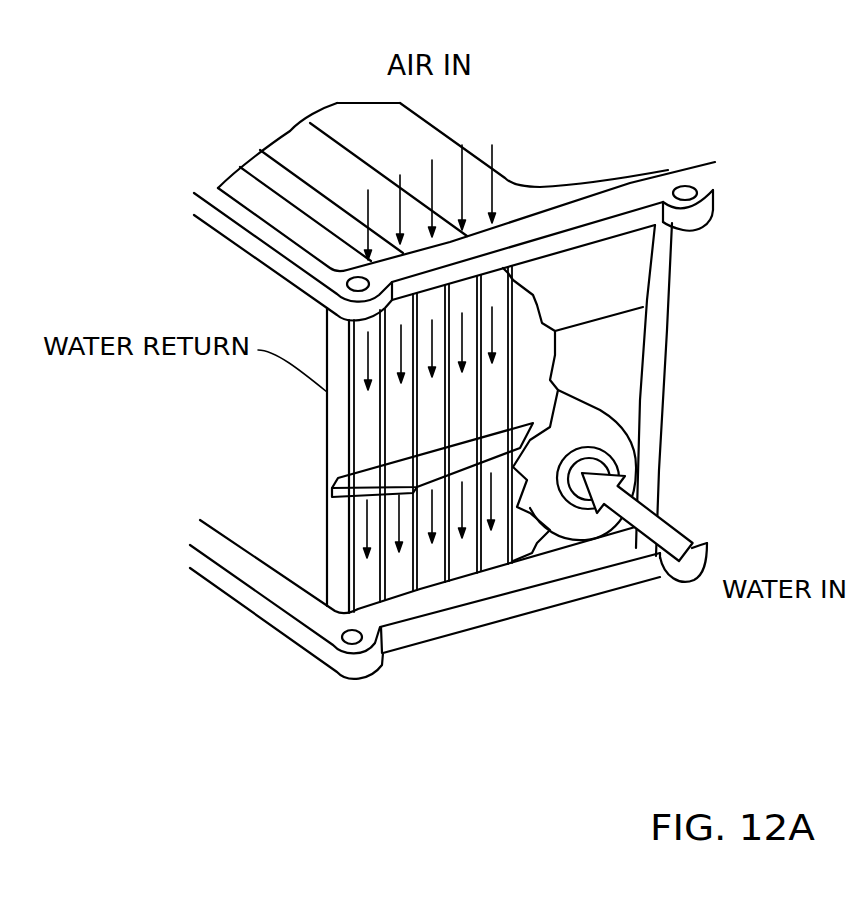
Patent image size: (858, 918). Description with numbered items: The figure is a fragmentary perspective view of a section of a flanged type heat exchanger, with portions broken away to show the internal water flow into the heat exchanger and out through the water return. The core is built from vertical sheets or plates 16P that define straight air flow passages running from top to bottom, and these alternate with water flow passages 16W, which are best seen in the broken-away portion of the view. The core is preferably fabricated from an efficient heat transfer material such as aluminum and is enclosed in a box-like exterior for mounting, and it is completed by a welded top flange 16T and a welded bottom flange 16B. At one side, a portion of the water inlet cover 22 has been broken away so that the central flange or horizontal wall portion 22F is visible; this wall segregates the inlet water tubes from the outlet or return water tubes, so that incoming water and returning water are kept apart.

The top flange 16T is at (590, 207).
The bottom flange 16B is at (250, 612).
The vertical sheets or plates 16P is at (368, 613).
The water flow passages 16W is at (400, 587).
The water inlet cover 22 is at (615, 365).
The central flange or horizontal wall portion 22F is at (408, 474).